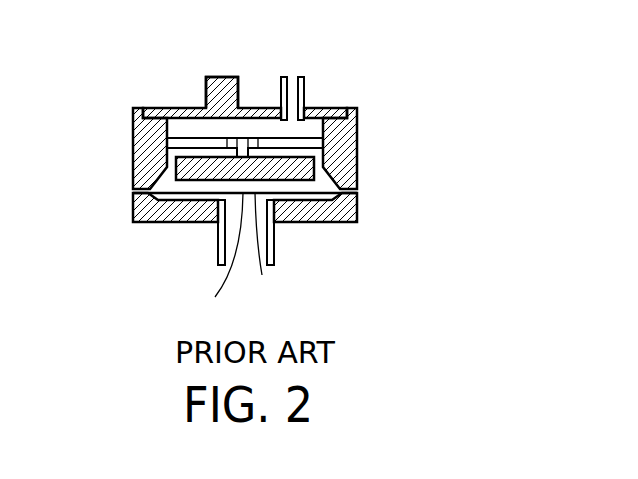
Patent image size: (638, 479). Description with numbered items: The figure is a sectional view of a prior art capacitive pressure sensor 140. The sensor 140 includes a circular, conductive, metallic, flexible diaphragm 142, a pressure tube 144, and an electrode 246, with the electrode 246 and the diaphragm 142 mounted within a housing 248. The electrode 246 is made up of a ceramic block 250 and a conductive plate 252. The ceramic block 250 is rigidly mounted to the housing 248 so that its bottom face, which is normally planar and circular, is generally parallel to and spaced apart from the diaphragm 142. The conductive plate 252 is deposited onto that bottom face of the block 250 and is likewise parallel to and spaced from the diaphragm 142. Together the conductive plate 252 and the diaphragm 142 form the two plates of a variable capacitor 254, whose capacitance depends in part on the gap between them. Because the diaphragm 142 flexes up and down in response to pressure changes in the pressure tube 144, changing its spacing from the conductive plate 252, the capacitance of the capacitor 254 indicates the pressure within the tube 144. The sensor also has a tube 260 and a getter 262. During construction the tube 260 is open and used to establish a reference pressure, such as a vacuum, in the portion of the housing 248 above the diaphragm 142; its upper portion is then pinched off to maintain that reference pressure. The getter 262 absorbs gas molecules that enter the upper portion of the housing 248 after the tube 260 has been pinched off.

The capacitive pressure sensor 140 is at (480, 164).
The diaphragm 142 is at (262, 250).
The pressure tube 144 is at (218, 246).
The electrode 246 is at (313, 158).
The housing 248 is at (133, 129).
The ceramic block 250 is at (197, 155).
The conductive plate 252 is at (203, 257).
The variable capacitor 254 is at (303, 196).
The tube 260 is at (306, 77).
The getter 262 is at (223, 77).